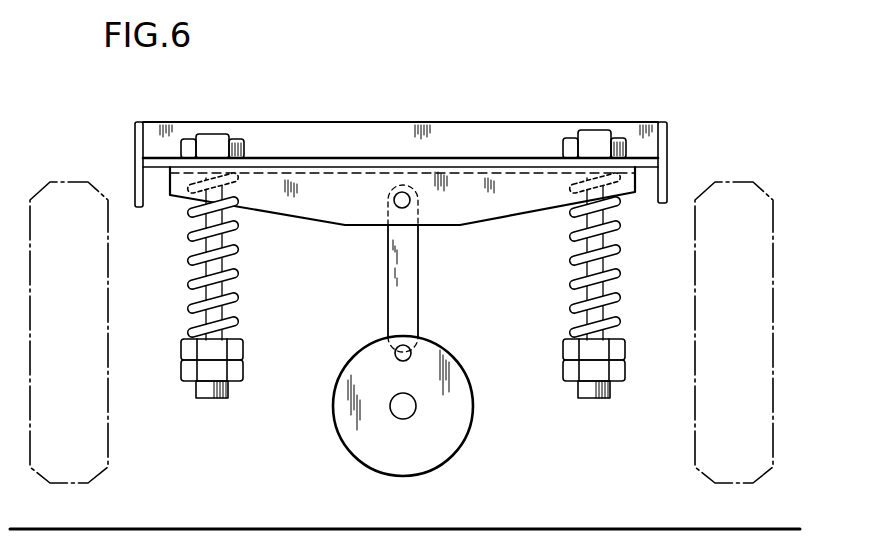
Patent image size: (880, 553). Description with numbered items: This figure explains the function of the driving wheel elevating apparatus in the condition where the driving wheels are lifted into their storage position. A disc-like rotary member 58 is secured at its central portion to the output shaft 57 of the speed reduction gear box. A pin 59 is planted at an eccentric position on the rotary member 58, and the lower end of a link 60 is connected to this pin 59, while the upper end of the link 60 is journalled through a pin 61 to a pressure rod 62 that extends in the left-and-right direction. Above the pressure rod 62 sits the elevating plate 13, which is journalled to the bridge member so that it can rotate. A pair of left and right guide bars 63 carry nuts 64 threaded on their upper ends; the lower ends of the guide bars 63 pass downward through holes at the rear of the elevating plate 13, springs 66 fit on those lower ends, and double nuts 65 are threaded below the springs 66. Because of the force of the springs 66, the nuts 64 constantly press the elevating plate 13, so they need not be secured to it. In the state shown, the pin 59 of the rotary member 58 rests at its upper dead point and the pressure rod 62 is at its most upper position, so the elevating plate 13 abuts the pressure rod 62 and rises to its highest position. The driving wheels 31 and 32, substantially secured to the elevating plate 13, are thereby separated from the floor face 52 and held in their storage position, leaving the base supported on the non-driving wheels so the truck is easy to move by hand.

The elevating plate 13 is at (478, 128).
The driving wheel 31 is at (56, 181).
The driving wheel 32 is at (722, 180).
The floor face 52 is at (225, 529).
The output shaft 57 is at (412, 413).
The rotary member 58 is at (473, 417).
The pin 59 is at (418, 338).
The link 60 is at (418, 268).
The pin 61 is at (398, 207).
The pressure rod 62 is at (320, 213).
The guide bar 63 is at (209, 134).
The nut 64 is at (236, 140).
The double nuts 65 is at (182, 368).
The spring 66 is at (188, 283).